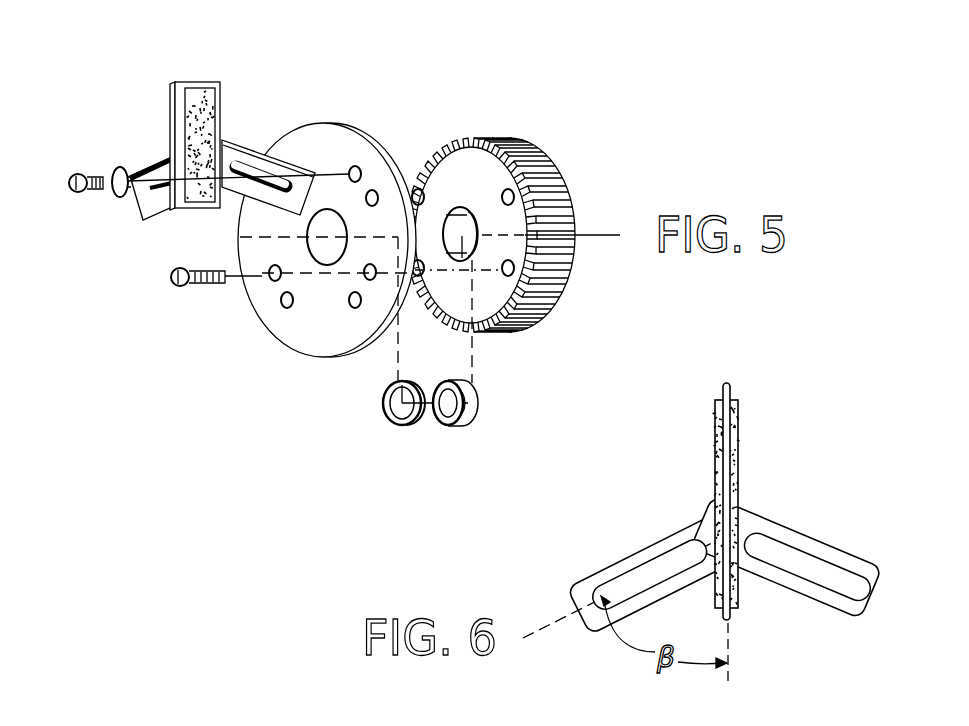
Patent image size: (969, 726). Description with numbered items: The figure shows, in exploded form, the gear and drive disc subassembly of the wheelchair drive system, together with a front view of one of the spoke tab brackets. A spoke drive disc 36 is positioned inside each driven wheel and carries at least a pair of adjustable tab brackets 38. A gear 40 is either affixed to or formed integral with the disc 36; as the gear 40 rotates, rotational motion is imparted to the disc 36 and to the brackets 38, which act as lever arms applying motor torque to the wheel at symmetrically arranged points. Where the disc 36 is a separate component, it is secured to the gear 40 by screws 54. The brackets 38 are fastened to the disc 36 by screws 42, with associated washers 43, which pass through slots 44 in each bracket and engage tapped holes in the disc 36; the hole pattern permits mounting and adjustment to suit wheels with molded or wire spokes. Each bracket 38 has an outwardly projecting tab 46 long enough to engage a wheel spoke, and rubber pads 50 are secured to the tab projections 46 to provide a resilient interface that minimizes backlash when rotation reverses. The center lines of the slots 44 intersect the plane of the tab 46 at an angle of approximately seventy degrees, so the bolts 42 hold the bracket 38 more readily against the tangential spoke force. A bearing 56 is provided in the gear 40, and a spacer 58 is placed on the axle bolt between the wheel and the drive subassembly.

In FIG. 5, the spoke drive disc 36 is at (357, 127).
In FIG. 5, the adjustable tab bracket 38 is at (247, 143).
In FIG. 6, the adjustable tab bracket 38 is at (832, 542).
In FIG. 5, the gear 40 is at (546, 155).
In FIG. 5, the screw 42 is at (76, 176).
In FIG. 5, the washer 43 is at (127, 170).
In FIG. 5, the slot 44 is at (248, 185).
In FIG. 6, the slot 44 is at (625, 570).
In FIG. 5, the tab projection 46 is at (221, 100).
In FIG. 6, the tab projection 46 is at (722, 392).
In FIG. 6, the rubber pad 50 is at (740, 493).
In FIG. 5, the screw 54 is at (226, 288).
In FIG. 5, the bearing 56 is at (486, 420).
In FIG. 5, the spacer 58 is at (394, 427).